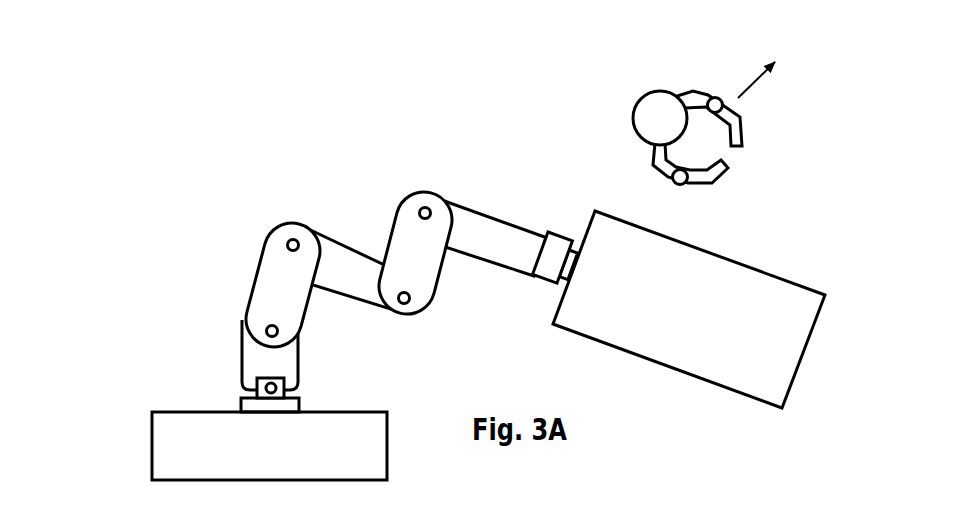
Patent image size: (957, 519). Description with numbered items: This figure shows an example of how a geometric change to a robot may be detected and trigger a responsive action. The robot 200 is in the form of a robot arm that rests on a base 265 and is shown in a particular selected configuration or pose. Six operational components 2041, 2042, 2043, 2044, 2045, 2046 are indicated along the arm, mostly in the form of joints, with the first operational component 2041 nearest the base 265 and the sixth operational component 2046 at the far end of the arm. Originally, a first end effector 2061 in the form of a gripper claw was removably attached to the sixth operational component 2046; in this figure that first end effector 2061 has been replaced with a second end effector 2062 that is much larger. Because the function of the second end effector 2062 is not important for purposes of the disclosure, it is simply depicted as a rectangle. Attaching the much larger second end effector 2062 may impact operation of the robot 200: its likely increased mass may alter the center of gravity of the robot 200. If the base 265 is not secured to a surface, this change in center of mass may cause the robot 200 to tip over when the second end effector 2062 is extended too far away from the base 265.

The robot 200 is at (127, 257).
The first operational component 2041 is at (257, 388).
The second operational component 2042 is at (258, 327).
The third operational component 2043 is at (285, 233).
The fourth operational component 2044 is at (405, 303).
The fifth operational component 2045 is at (422, 192).
The sixth operational component 2046 is at (558, 232).
The first end effector 2061 is at (712, 62).
The second end effector 2062 is at (694, 222).
The base 265 is at (337, 415).